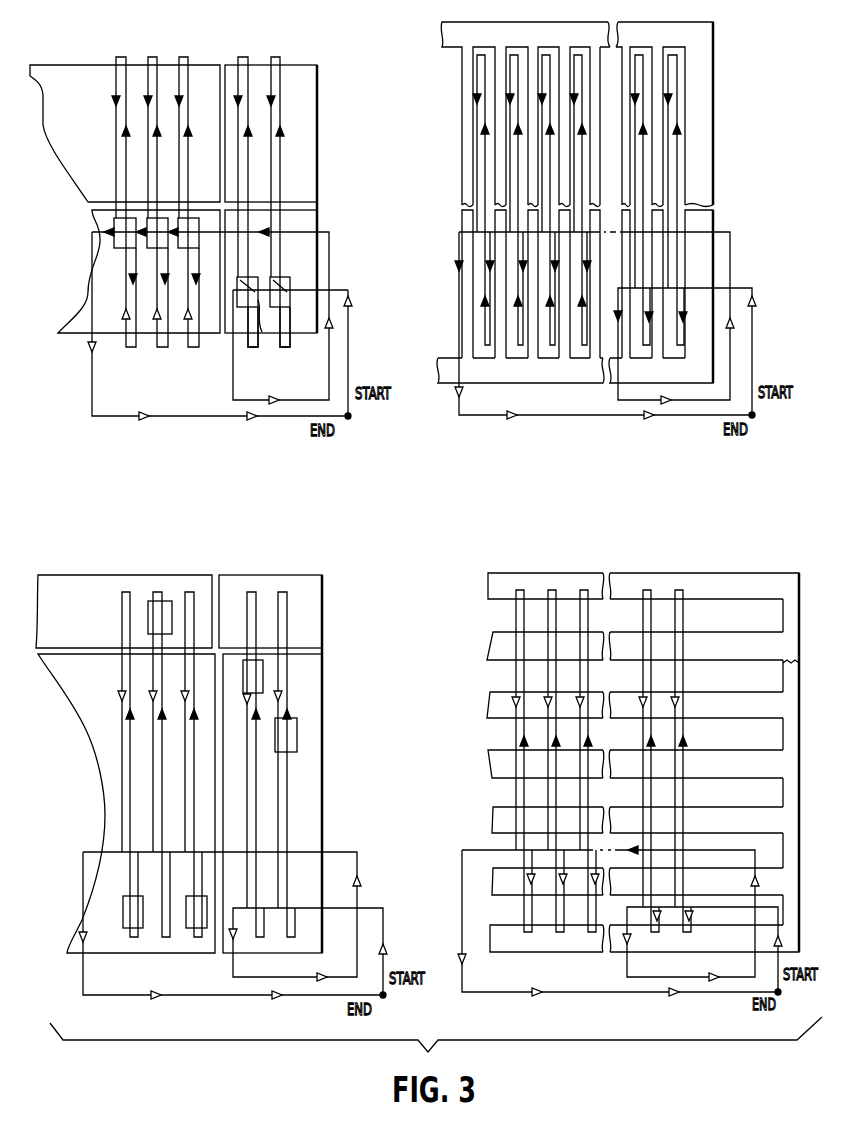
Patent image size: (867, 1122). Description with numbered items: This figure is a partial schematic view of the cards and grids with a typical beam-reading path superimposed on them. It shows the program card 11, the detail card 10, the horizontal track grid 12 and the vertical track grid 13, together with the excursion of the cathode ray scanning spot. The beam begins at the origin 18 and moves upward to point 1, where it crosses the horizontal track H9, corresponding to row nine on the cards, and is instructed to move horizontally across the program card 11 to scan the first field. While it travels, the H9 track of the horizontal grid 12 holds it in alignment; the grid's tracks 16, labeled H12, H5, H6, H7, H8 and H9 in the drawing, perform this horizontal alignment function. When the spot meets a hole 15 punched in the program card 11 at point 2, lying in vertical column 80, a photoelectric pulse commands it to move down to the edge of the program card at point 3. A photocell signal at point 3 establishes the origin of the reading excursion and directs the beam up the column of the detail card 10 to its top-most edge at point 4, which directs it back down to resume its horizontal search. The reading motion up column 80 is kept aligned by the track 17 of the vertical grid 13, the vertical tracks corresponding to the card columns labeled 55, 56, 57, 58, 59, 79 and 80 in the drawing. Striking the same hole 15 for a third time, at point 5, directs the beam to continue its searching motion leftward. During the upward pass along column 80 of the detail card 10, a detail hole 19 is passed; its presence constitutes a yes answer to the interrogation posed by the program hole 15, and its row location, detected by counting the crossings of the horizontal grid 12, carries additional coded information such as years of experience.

The point 1 is at (293, 281).
The point 2 is at (245, 286).
The point 3 is at (250, 310).
The point 4 is at (147, 191).
The point 5 is at (242, 278).
The detail card 10 is at (315, 620).
The program card 11 is at (317, 120).
The horizontal track grid 12 is at (500, 575).
The vertical track grid 13 is at (706, 117).
The hole 15 is at (267, 327).
The tracks 16 is at (503, 600).
The track 17 is at (476, 52).
The origin 18 is at (350, 418).
The detail hole 19 is at (148, 617).
The wire 55 is at (129, 747).
The wire 56 is at (159, 747).
The wire 57 is at (159, 488).
The wire 58 is at (156, 193).
The wire 59 is at (187, 193).
The wire 79 is at (249, 488).
The vertical column 80 is at (280, 488).
The slot H12 is at (806, 615).
The slot H5 is at (803, 676).
The slot H6 is at (803, 734).
The slot H7 is at (803, 793).
The slot H8 is at (803, 850).
The horizontal track H9 is at (803, 910).